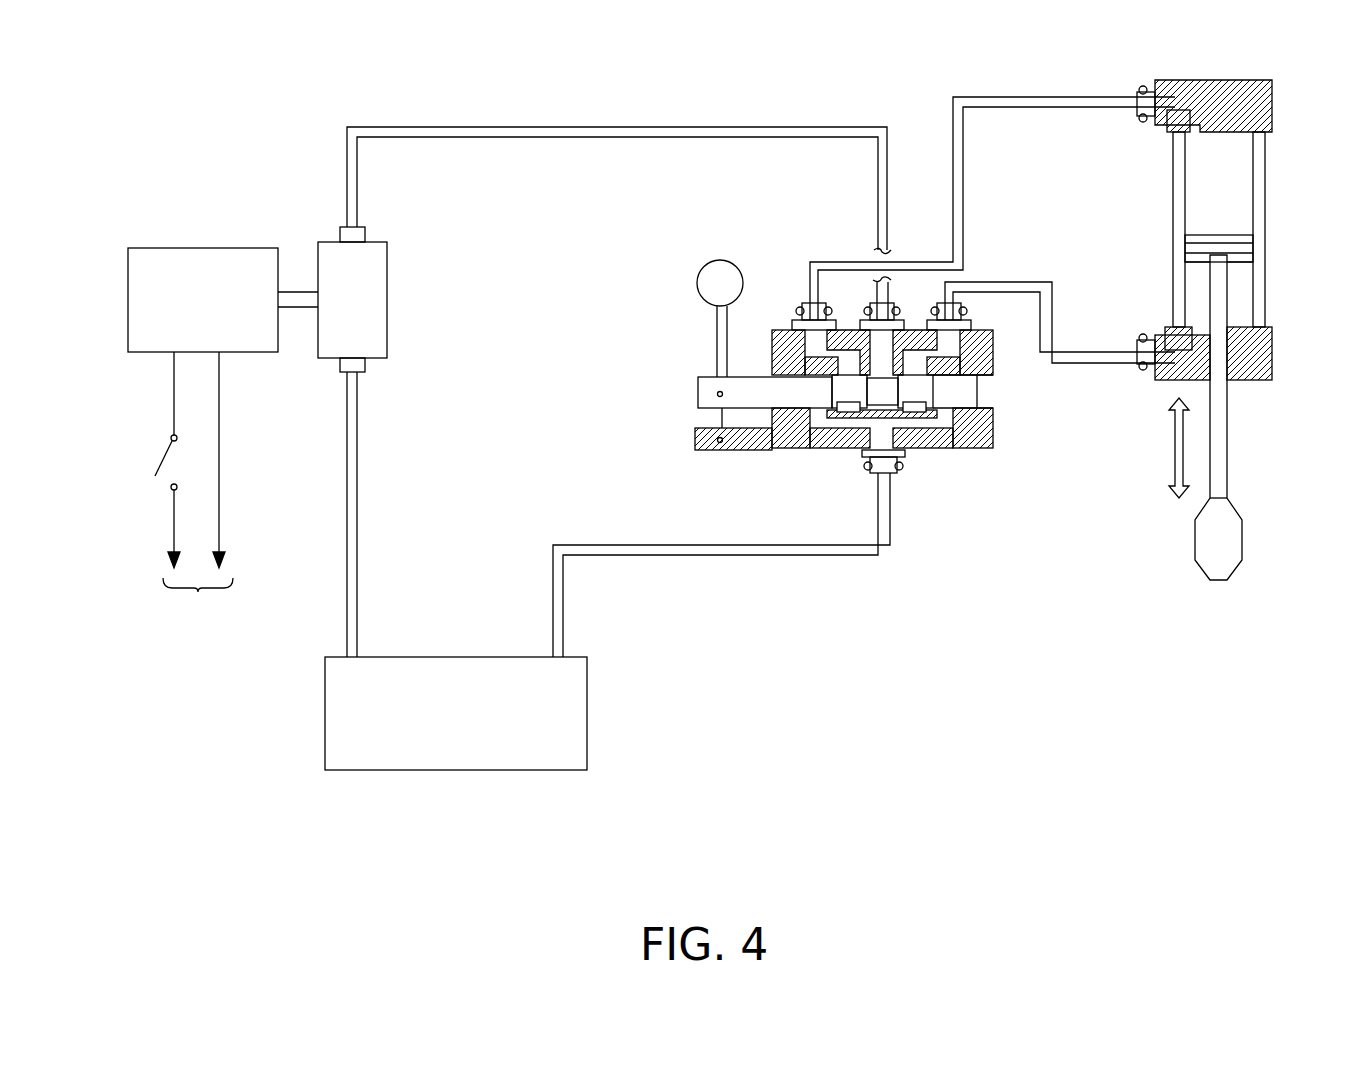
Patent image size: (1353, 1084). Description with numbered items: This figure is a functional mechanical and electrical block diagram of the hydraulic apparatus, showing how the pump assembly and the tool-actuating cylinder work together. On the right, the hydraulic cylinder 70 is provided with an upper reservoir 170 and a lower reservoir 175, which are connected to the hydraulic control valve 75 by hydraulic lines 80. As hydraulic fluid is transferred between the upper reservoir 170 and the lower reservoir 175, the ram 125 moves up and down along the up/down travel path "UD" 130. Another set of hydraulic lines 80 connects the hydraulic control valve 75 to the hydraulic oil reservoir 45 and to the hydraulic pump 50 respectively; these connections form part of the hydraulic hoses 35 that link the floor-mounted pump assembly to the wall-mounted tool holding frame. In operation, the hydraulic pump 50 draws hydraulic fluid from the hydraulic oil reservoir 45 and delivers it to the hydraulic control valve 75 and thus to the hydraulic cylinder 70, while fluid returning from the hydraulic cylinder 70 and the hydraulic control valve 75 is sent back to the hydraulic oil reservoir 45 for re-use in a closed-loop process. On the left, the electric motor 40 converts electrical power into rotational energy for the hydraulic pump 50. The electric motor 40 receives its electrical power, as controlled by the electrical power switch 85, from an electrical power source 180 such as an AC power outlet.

The hydraulic hoses 35 is at (455, 127).
The electric motor 40 is at (128, 305).
The hydraulic oil reservoir 45 is at (325, 713).
The hydraulic pump 50 is at (328, 240).
The hydraulic cylinder 70 is at (1272, 100).
The hydraulic control valve 75 is at (975, 450).
The hydraulic lines 80 is at (605, 127).
The electrical power switch 85 is at (162, 458).
The ram 125 is at (1228, 440).
The up/down travel path 130 is at (1170, 469).
The upper reservoir 170 is at (1245, 190).
The lower reservoir 175 is at (1245, 298).
The electrical power source 180 is at (198, 486).